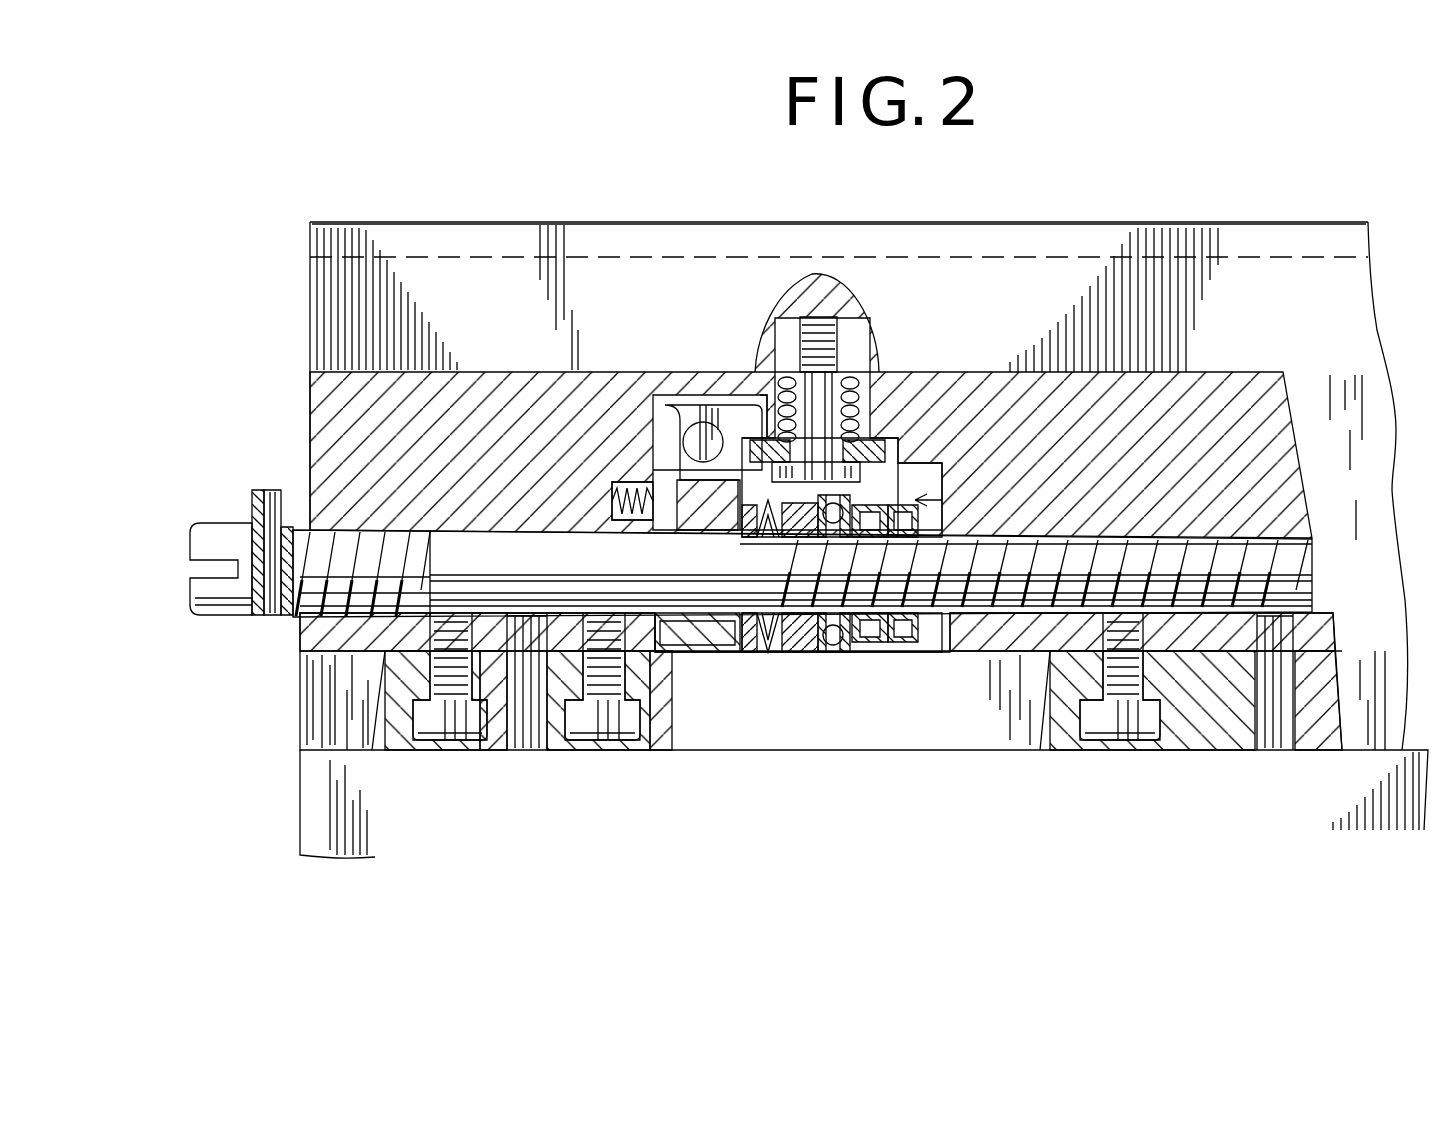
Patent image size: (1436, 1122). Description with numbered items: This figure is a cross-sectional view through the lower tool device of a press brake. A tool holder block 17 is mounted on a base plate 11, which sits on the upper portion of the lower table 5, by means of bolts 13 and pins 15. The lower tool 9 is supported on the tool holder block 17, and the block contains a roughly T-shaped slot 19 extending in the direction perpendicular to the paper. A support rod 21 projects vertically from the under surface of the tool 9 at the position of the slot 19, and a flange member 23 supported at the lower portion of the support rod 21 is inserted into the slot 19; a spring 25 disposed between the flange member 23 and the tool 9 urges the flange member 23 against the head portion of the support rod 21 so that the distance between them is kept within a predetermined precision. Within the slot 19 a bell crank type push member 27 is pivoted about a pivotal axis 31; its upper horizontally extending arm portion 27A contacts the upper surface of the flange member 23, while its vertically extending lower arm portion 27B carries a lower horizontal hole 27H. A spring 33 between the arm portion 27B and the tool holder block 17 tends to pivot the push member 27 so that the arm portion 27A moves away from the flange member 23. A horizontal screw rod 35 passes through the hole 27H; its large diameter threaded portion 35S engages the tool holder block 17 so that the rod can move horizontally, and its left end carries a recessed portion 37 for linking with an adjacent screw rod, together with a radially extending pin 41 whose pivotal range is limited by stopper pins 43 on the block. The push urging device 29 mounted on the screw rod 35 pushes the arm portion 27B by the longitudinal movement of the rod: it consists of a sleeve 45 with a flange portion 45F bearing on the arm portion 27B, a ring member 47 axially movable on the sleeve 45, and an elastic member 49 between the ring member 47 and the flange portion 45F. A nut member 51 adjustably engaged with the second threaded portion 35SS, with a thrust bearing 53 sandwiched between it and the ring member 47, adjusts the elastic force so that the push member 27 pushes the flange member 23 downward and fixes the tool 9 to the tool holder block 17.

The lower table 5 is at (322, 802).
The lower tool 9 is at (466, 240).
The base plate 11 is at (312, 710).
The bolts 13 is at (445, 720).
The pins 15 is at (527, 735).
The tool holder block 17 is at (1238, 385).
The T-shaped slot 19 is at (945, 467).
The support rod 21 is at (797, 318).
The flange member 23 is at (900, 450).
The spring 25 is at (862, 400).
The push member 27 is at (700, 400).
The upper horizontally extending arm portion 27A is at (757, 395).
The vertically extending lower arm portion 27B is at (698, 652).
The lower horizontal hole 27H is at (705, 532).
The push urging device 29 is at (943, 500).
The pivotal axis 31 is at (690, 440).
The spring 33 is at (630, 485).
The screw rod 35 is at (530, 550).
The large diameter threaded portion 35S is at (350, 540).
The second threaded portion 35SS is at (988, 590).
The recessed portion 37 is at (218, 563).
The radially extending pin 41 is at (282, 530).
The stopper pins 43 is at (262, 497).
The sleeve 45 is at (755, 655).
The flange portion 45F is at (768, 652).
The ring member 47 is at (820, 655).
The elastic member 49 is at (790, 652).
The nut member 51 is at (880, 652).
The thrust bearing 53 is at (845, 652).